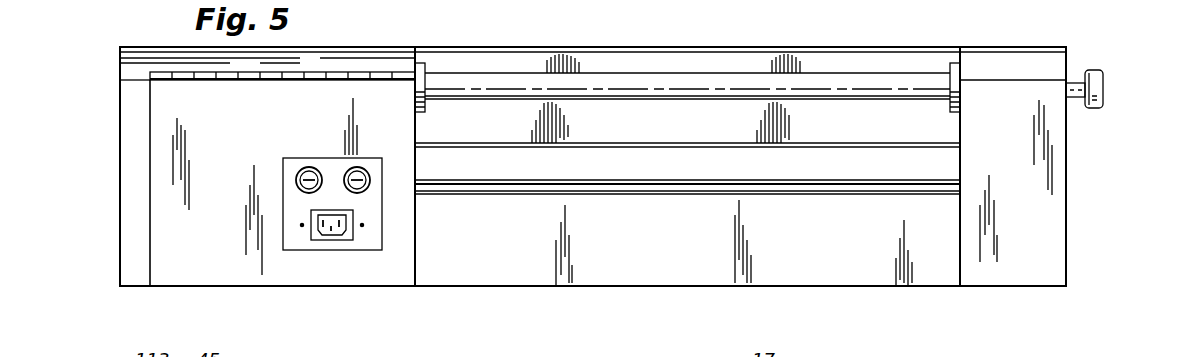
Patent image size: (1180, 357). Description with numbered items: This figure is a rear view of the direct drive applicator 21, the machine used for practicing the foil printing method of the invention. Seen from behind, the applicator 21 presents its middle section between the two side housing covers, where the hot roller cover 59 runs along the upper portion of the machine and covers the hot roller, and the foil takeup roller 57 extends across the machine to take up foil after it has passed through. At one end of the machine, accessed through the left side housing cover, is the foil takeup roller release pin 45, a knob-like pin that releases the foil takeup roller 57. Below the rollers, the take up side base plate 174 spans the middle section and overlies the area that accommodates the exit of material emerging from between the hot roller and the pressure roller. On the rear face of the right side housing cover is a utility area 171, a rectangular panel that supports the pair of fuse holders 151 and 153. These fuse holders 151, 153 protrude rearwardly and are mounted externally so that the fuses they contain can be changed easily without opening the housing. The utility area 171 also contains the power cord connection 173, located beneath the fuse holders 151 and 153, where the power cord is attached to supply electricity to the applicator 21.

The applicator 21 is at (635, 170).
The foil takeup roller release pin 45 is at (1103, 83).
The foil takeup roller 57 is at (884, 73).
The hot roller cover 59 is at (717, 62).
The fuse holder 151 is at (368, 170).
The fuse holder 153 is at (310, 172).
The utility area 171 is at (342, 225).
The power cord connection 173 is at (318, 232).
The take up side base plate 174 is at (722, 171).